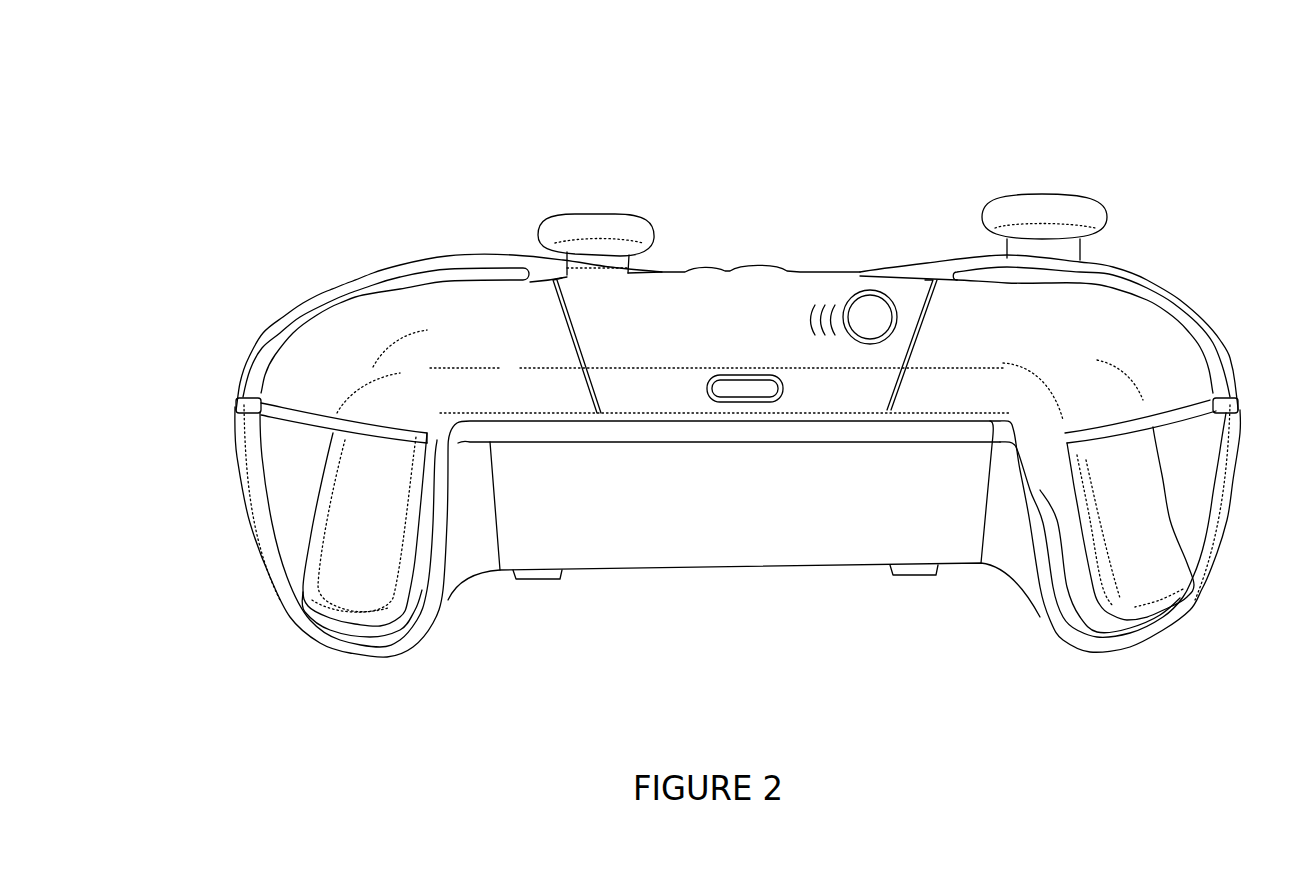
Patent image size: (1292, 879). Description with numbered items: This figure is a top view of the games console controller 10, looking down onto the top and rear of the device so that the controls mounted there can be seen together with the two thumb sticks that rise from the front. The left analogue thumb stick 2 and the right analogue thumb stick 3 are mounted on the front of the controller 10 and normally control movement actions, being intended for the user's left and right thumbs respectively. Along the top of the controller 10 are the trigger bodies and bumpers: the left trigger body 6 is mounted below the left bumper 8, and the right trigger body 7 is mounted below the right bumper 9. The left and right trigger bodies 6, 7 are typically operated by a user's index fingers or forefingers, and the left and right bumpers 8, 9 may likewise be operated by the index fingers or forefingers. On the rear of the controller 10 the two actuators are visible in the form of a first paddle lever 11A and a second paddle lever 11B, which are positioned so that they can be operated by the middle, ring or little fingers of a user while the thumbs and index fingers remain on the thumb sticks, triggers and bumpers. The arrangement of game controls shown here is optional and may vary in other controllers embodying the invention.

The controller 10 is at (767, 198).
The left analogue thumb stick 2 is at (1047, 210).
The right analogue thumb stick 3 is at (587, 217).
The right bumper 9 is at (347, 333).
The left bumper 8 is at (1157, 332).
The right trigger body 7 is at (333, 590).
The left trigger body 6 is at (1153, 570).
The first paddle lever 11A is at (543, 580).
The second paddle lever 11B is at (912, 578).